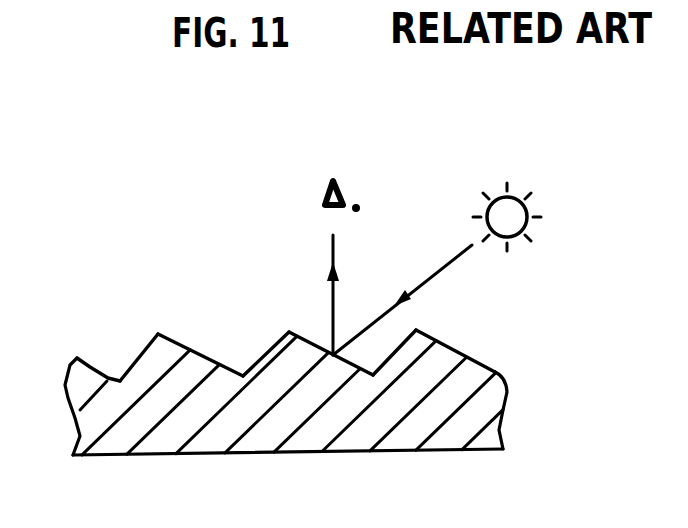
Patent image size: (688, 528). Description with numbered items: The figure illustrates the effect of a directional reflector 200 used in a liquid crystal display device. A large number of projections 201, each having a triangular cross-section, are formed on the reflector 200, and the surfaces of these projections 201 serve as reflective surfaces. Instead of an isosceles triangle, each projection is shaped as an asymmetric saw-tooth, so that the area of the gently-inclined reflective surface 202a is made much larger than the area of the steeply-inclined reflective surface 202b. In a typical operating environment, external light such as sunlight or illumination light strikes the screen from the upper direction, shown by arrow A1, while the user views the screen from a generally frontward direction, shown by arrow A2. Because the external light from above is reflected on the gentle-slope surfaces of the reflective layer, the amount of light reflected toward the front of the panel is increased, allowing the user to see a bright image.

The reflector 200 is at (237, 162).
The projections 201 is at (168, 348).
The gently-inclined reflective surface 202a is at (200, 353).
The steeply-inclined reflective surface 202b is at (137, 360).
The arrow A1 is at (448, 265).
The arrow A2 is at (333, 245).